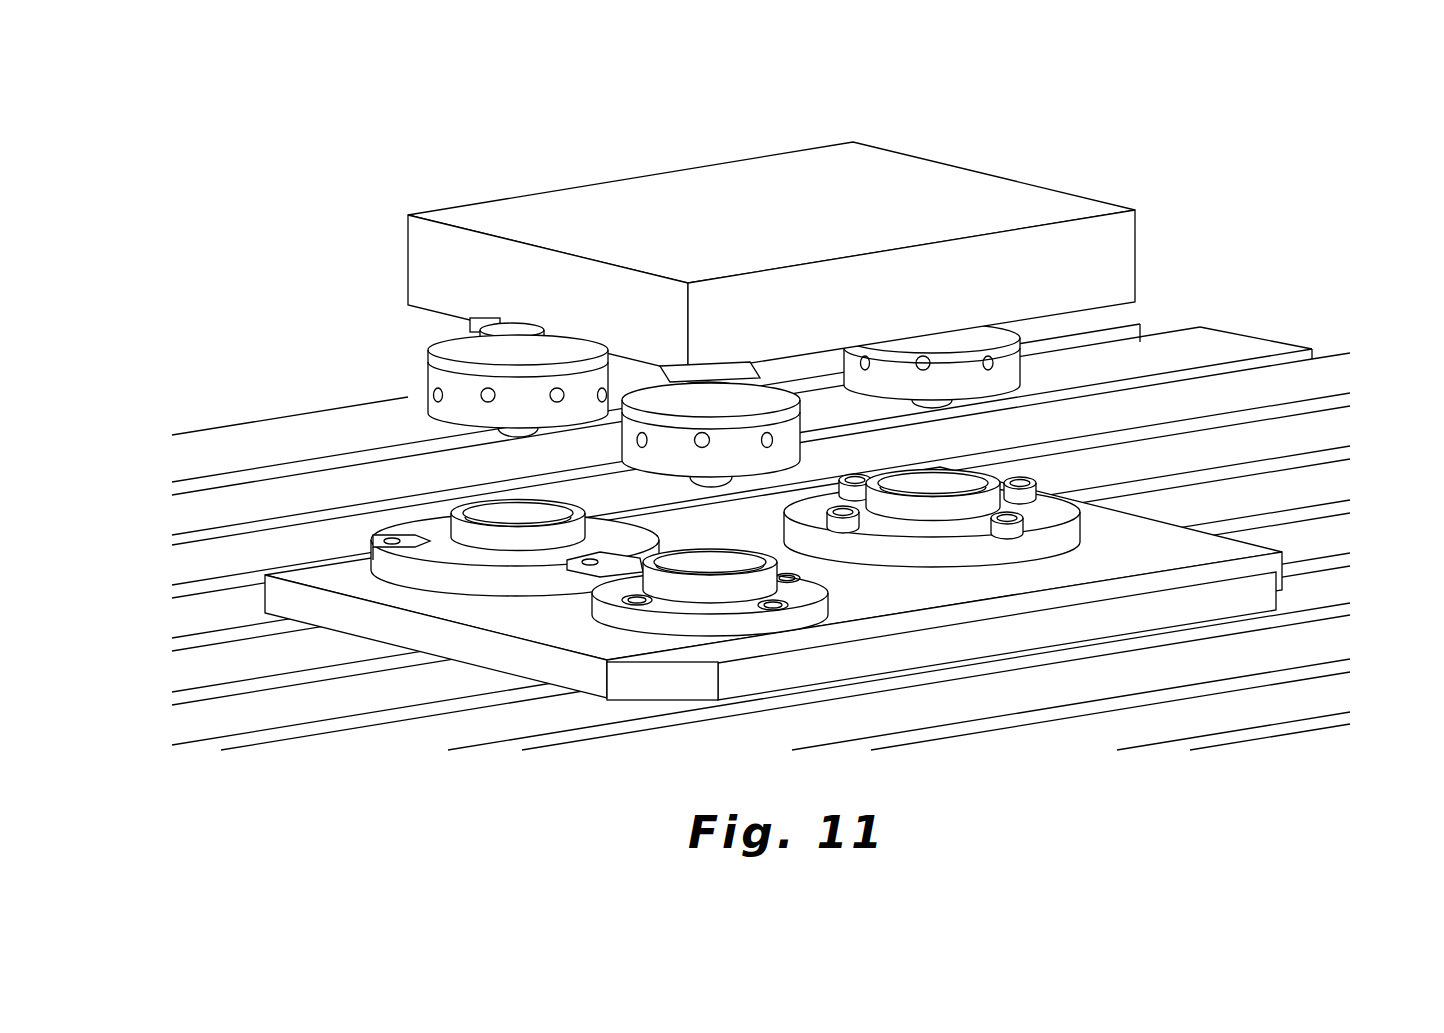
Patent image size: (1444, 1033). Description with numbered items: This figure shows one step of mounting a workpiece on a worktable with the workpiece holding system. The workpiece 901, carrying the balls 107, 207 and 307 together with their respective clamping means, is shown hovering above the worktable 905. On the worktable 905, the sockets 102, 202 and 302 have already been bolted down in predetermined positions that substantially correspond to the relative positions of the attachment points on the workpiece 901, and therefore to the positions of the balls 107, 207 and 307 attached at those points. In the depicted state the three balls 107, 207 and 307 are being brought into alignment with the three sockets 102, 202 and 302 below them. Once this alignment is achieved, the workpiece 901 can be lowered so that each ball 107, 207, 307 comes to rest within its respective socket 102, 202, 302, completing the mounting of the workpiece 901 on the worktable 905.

The workpiece 901 is at (810, 192).
The worktable 905 is at (1248, 228).
The ball 207 is at (930, 405).
The ball 307 is at (713, 478).
The ball 107 is at (510, 428).
The socket 102 is at (437, 603).
The socket 302 is at (657, 650).
The socket 202 is at (1003, 572).